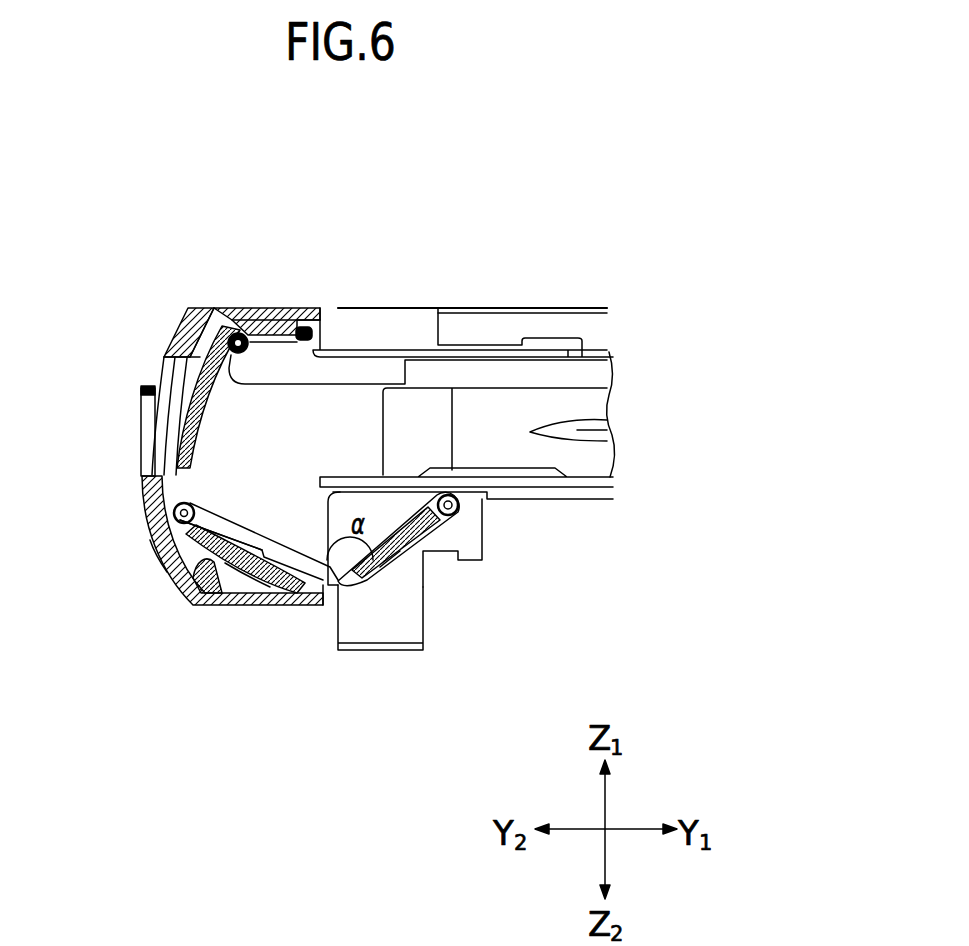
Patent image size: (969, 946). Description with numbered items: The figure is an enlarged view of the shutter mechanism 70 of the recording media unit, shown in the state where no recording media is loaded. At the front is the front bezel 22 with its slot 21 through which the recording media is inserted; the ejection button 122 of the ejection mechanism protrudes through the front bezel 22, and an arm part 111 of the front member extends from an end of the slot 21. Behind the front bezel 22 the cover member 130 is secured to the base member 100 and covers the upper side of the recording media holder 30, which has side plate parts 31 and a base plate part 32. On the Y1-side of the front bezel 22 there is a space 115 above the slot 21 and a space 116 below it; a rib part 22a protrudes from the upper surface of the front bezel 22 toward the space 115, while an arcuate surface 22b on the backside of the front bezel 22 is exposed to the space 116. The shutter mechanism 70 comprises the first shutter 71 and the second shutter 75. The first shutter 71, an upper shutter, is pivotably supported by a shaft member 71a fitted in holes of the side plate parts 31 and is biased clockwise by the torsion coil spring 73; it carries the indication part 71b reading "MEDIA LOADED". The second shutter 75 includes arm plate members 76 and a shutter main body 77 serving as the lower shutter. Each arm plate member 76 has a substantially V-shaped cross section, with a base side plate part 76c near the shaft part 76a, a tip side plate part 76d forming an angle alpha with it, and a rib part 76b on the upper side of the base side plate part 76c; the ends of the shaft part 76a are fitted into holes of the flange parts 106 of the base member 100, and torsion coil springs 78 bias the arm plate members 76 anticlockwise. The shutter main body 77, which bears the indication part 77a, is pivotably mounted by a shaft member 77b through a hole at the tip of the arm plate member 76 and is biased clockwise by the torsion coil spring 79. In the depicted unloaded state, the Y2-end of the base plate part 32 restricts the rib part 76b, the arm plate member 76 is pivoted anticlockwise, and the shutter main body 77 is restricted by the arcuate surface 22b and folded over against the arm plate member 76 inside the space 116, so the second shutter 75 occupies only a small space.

The shutter mechanism 70 is at (463, 244).
The cover member 130 is at (548, 306).
The front bezel 22 is at (182, 320).
The rib part 22a is at (241, 333).
The arcuate surface 22b is at (185, 591).
The first shutter 71 is at (210, 405).
The shaft member 71a is at (215, 322).
The indication part 71b is at (176, 370).
The torsion coil spring 73 is at (266, 350).
The space 115 is at (283, 330).
The ejection button 122 is at (141, 402).
The slot 21 is at (166, 405).
The side plate parts 31 is at (290, 365).
The base plate part 32 is at (347, 476).
The recording media holder 30 is at (612, 460).
The arm part 111 is at (611, 405).
The base member 100 is at (592, 500).
The flange parts 106 is at (484, 522).
The second shutter 75 is at (422, 697).
The arm plate member 76 is at (372, 586).
The shaft part 76a is at (460, 512).
The rib part 76b is at (320, 508).
The base side plate part 76c is at (405, 545).
The tip side plate part 76d is at (236, 522).
The shutter main body 77 is at (267, 583).
The indication part 77a is at (216, 576).
The shaft member 77b is at (175, 513).
The torsion coil springs 78 is at (398, 533).
The torsion coil spring 79 is at (170, 552).
The space 116 is at (238, 578).